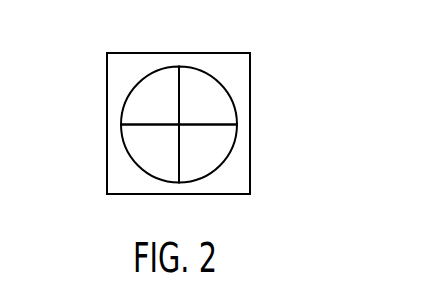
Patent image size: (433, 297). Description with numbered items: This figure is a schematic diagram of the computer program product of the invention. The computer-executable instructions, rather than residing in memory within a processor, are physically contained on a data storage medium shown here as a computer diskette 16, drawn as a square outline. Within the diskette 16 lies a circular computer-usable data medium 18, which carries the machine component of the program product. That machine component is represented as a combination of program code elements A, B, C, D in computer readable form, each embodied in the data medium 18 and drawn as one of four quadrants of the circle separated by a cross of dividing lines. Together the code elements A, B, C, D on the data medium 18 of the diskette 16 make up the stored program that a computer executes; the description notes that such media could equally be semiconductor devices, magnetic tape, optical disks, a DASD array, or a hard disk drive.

The computer diskette 16 is at (215, 62).
The computer-usable data medium 18 is at (210, 125).
The program code element A is at (150, 96).
The program code element B is at (208, 96).
The program code element C is at (208, 154).
The program code element D is at (150, 154).